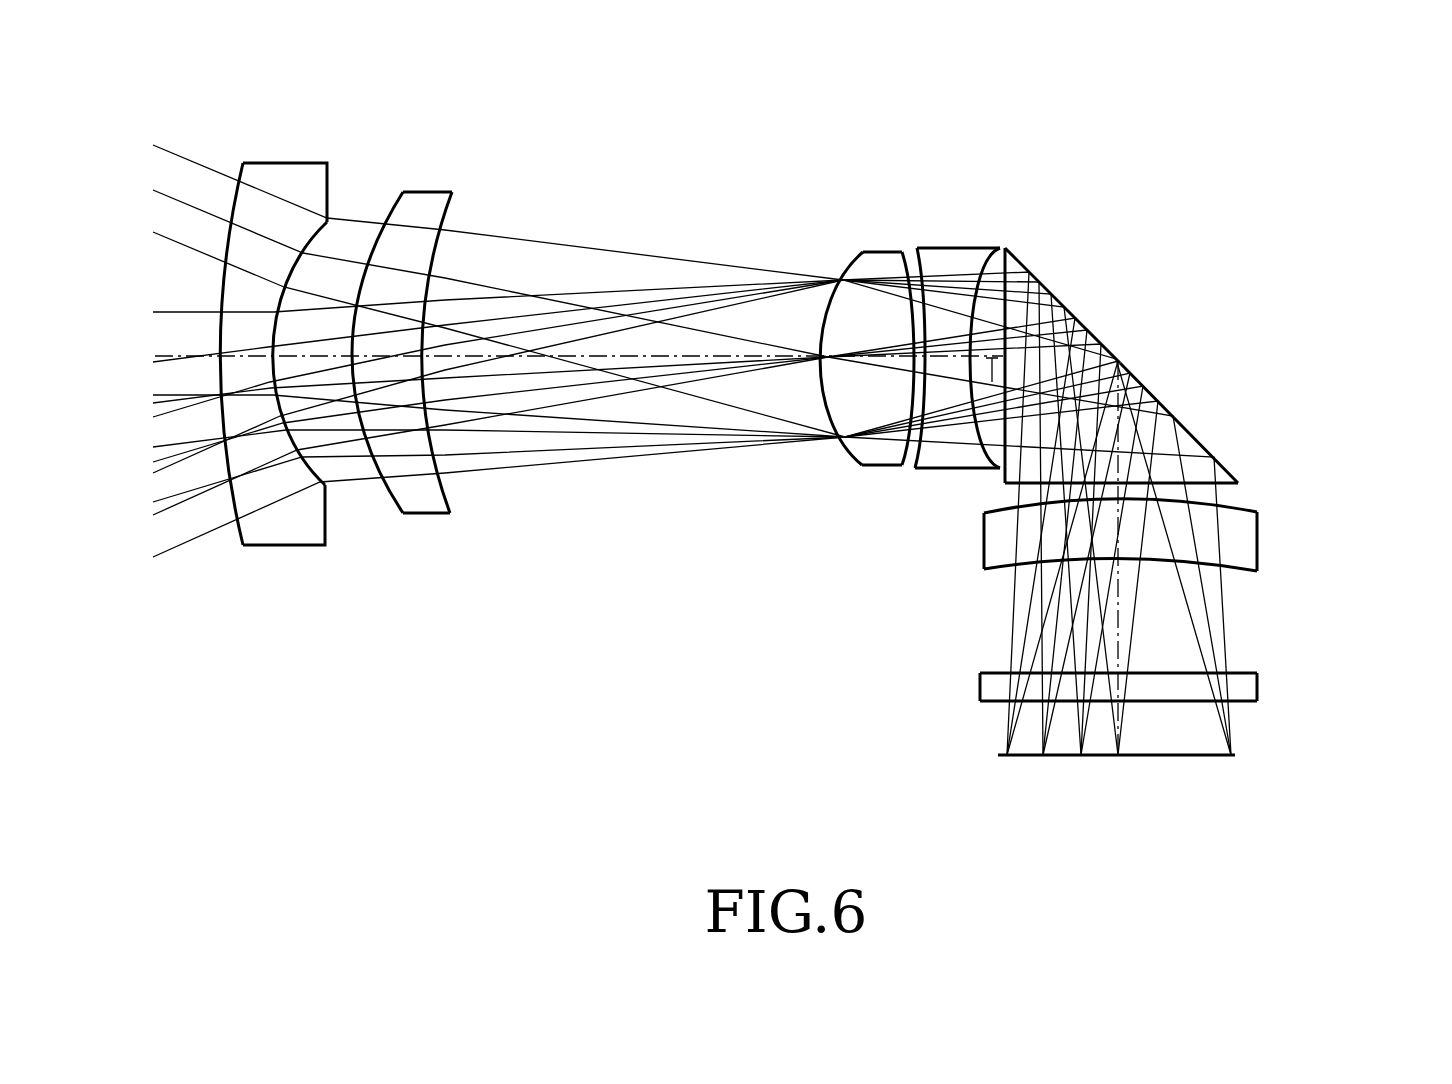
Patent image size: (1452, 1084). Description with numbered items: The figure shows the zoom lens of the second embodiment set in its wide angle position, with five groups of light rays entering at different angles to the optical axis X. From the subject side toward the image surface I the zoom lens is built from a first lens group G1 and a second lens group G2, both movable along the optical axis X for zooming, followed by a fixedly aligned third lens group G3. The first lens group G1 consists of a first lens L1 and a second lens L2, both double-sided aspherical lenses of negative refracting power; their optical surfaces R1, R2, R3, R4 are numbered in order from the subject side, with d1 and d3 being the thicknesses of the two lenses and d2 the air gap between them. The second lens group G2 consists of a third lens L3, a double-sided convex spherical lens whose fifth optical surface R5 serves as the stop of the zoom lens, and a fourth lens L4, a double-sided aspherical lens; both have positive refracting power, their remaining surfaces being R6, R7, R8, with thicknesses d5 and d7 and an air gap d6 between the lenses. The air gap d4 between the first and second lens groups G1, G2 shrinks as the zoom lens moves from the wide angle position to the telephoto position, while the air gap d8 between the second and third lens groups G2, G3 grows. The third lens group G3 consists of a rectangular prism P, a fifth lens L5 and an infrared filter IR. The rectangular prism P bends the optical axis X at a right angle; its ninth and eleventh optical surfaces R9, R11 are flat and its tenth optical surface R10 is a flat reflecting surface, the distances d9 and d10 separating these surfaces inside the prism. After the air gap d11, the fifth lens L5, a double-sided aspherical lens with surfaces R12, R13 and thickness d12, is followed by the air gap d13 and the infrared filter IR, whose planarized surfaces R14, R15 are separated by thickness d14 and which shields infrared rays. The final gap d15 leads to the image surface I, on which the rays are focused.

The first lens group G1 is at (450, 553).
The second lens group G2 is at (858, 477).
The third lens group G3 is at (1388, 247).
The first lens L1 is at (277, 307).
The second lens L2 is at (442, 305).
The third lens L3 is at (831, 312).
The fourth lens L4 is at (971, 296).
The fifth lens L5 is at (1161, 570).
The rectangular prism P is at (1183, 349).
The infrared filter IR is at (1102, 701).
The image surface I is at (1157, 758).
The optical axis X is at (648, 356).
The first optical surface R1 is at (245, 164).
The second optical surface R2 is at (327, 192).
The third optical surface R3 is at (395, 193).
The fourth optical surface R4 is at (452, 194).
The fifth optical surface R5 is at (843, 267).
The sixth optical surface R6 is at (903, 257).
The seventh optical surface R7 is at (917, 250).
The eighth optical surface R8 is at (978, 262).
The ninth optical surface R9 is at (1028, 270).
The tenth optical surface R10 is at (1160, 402).
The eleventh optical surface R11 is at (1235, 480).
The twelfth optical surface R12 is at (1008, 505).
The thirteenth optical surface R13 is at (1254, 578).
The fourteenth optical surface R14 is at (1243, 673).
The fifteenth optical surface R15 is at (1253, 702).
The thickness of first optical surface d1 is at (250, 358).
The air gap of second optical surface d2 is at (312, 358).
The thickness of third optical surface d3 is at (400, 358).
The air gap between first and second lens groups d4 is at (693, 360).
The thickness of fifth optical surface d5 is at (860, 465).
The air gap of sixth optical surface d6 is at (918, 372).
The thickness of seventh optical surface d7 is at (957, 362).
The air gap between second and third lens groups d8 is at (990, 385).
The distance of ninth optical surface d9 is at (1063, 360).
The distance of tenth optical surface d10 is at (1123, 423).
The air gap of eleventh optical surface d11 is at (1118, 488).
The thickness of twelfth optical surface d12 is at (1120, 568).
The air gap of thirteenth optical surface d13 is at (1120, 618).
The thickness of fourteenth optical surface d14 is at (1120, 687).
The air gap of fifteenth optical surface d15 is at (1117, 725).